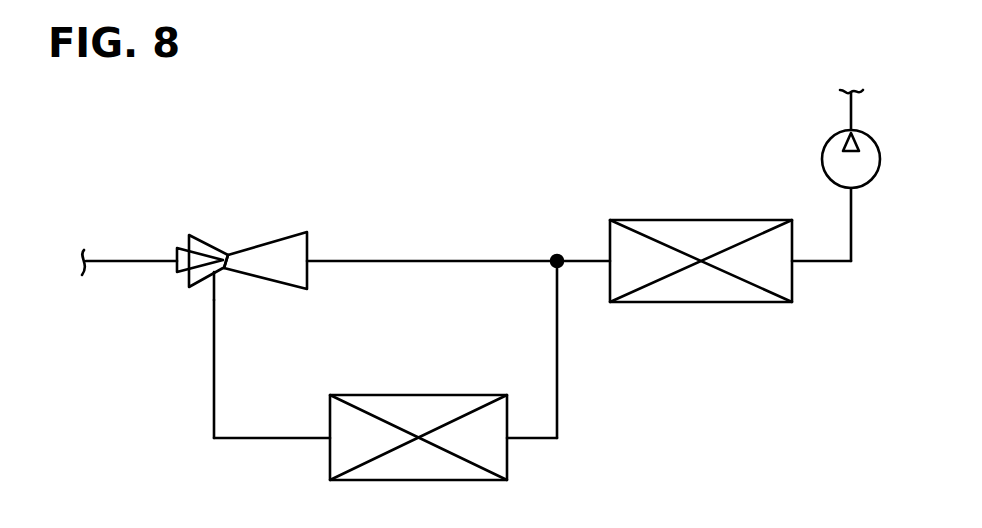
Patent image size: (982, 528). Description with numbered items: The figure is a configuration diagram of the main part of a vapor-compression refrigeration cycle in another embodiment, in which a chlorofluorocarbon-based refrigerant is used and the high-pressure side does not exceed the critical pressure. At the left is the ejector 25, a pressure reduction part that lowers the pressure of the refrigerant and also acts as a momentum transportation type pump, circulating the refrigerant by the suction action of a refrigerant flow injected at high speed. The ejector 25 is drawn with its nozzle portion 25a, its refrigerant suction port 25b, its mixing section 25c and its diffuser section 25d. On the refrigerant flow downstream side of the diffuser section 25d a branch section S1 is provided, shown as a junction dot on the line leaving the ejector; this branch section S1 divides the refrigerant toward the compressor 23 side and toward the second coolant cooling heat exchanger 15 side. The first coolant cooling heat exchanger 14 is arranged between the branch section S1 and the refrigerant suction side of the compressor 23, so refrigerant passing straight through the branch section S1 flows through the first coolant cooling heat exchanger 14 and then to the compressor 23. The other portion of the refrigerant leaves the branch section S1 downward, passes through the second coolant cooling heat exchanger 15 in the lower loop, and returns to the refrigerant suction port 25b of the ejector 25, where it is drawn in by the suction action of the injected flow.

The ejector 25 is at (252, 253).
The nozzle portion 25a is at (212, 251).
The refrigerant suction port 25b is at (212, 278).
The mixing section 25c is at (232, 250).
The diffuser section 25d is at (298, 261).
The branch section S1 is at (557, 253).
The first coolant cooling heat exchanger 14 is at (663, 220).
The second coolant cooling heat exchanger 15 is at (328, 457).
The compressor 23 is at (824, 157).